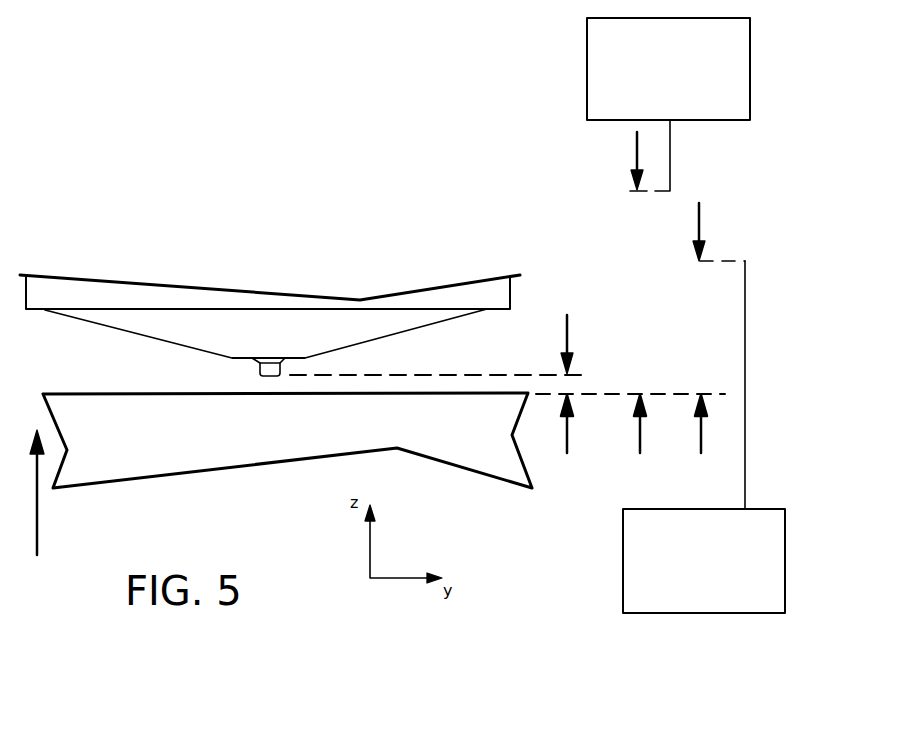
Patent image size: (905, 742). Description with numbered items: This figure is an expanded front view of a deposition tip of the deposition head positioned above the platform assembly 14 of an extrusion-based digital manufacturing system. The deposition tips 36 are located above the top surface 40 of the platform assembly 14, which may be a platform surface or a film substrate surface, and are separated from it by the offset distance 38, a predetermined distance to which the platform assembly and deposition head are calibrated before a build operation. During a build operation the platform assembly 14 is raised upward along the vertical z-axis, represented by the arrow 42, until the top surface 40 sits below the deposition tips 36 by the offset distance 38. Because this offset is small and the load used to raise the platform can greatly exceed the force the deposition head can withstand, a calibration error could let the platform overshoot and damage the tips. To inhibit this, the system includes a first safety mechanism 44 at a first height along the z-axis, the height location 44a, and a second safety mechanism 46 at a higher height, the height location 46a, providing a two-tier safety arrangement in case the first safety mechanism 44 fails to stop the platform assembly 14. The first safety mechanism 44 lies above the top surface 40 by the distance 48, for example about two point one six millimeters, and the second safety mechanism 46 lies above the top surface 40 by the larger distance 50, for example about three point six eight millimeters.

The platform assembly 14 is at (183, 453).
The deposition tips 36 is at (240, 375).
The offset distance 38 is at (568, 325).
The top surface 40 is at (78, 394).
The arrow 42 is at (38, 537).
The first safety mechanism 44 is at (623, 550).
The height location 44a is at (682, 261).
The second safety mechanism 46 is at (587, 33).
The height location 46a is at (605, 191).
The distance 48 is at (701, 222).
The distance 50 is at (635, 155).